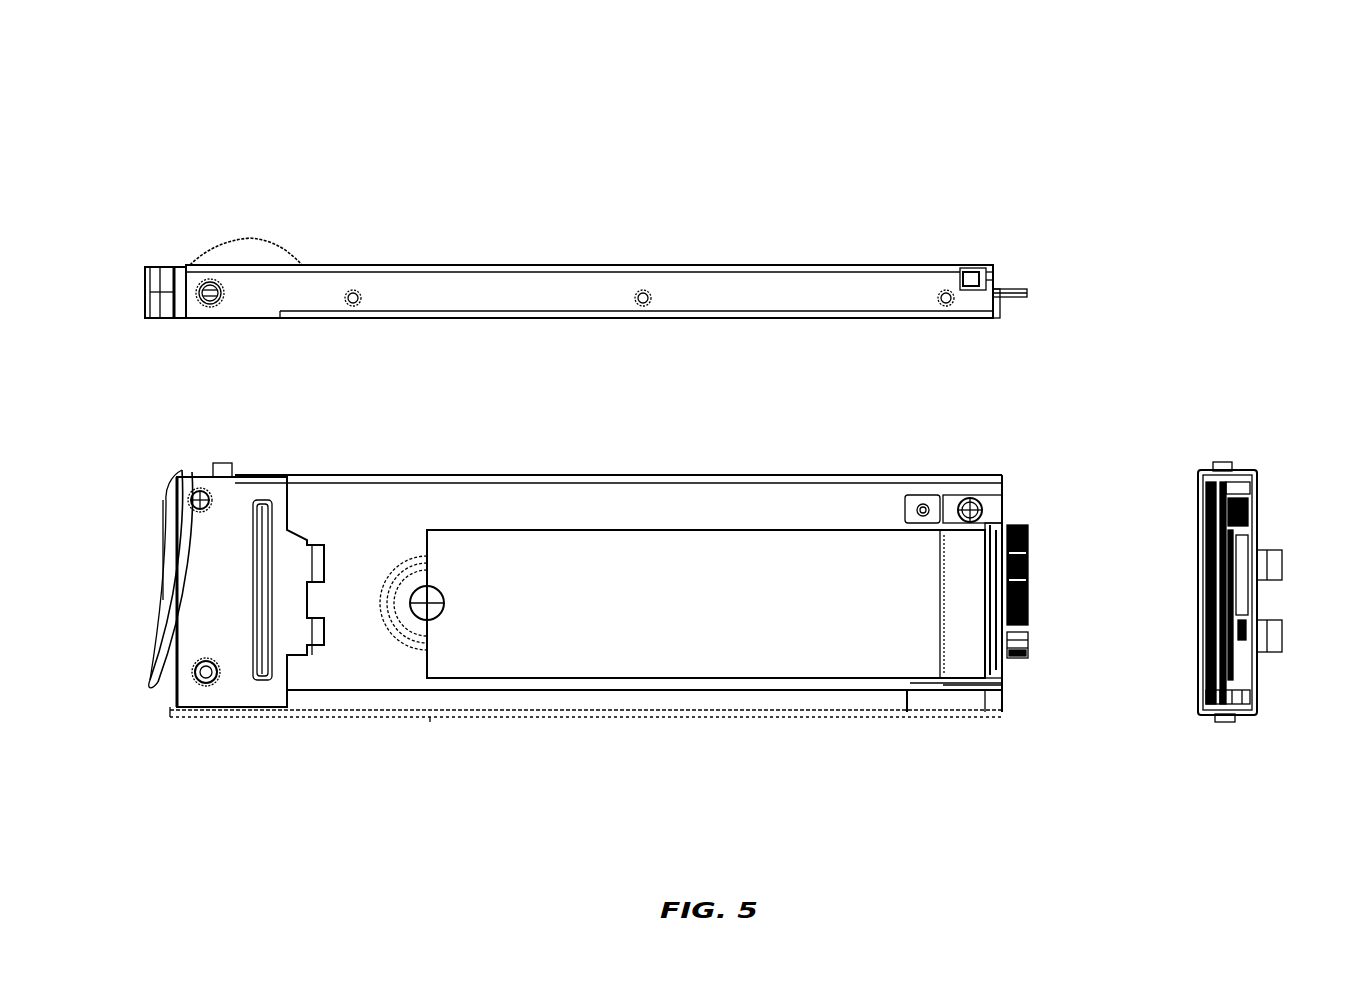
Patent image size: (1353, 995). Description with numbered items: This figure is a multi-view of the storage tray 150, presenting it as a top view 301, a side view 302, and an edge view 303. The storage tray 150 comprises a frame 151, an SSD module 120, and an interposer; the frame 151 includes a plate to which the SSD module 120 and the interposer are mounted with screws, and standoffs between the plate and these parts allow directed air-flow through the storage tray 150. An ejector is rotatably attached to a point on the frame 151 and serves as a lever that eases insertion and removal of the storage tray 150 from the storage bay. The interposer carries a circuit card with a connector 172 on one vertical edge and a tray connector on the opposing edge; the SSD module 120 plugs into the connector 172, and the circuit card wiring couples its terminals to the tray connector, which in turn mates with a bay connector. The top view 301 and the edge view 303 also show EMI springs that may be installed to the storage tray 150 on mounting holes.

The storage tray 150 is at (188, 165).
The frame 151 is at (470, 278).
The connector 172 is at (963, 660).
The SSD module 120 is at (580, 660).
The top view 301 is at (583, 271).
The side view 302 is at (605, 629).
The edge view 303 is at (1243, 551).